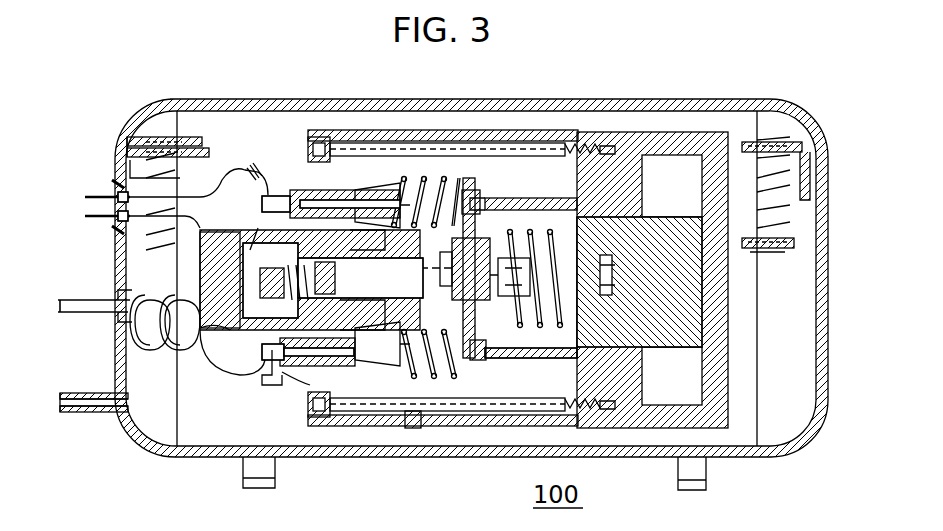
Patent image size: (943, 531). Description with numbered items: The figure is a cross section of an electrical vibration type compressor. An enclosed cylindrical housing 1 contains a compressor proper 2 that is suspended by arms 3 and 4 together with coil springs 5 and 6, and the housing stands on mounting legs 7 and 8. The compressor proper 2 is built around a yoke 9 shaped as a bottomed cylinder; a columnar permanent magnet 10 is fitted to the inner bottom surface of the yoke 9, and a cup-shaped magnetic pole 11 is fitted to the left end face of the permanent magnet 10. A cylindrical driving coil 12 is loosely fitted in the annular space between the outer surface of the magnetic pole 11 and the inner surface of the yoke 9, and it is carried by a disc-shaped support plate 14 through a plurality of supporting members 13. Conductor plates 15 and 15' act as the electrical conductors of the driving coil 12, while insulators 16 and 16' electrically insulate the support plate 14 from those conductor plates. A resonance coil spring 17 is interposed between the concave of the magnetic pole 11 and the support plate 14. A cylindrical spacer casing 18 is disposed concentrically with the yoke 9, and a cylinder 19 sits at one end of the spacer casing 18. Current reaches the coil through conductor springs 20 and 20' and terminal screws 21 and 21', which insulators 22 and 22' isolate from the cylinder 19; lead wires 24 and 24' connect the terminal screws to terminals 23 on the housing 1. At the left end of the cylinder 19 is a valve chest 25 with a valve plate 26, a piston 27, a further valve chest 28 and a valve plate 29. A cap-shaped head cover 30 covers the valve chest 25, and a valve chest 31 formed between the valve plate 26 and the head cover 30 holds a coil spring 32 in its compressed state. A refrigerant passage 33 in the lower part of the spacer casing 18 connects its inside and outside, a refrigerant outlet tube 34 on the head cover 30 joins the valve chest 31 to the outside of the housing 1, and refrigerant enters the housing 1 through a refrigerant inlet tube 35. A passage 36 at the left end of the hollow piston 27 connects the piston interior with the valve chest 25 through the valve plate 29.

The enclosed cylindrical housing 1 is at (242, 99).
The compressor proper 2 is at (513, 128).
The arm 3 is at (127, 170).
The arm 4 is at (812, 150).
The coil spring 5 is at (180, 185).
The coil spring 6 is at (790, 223).
The mounting leg 7 is at (276, 472).
The mounting leg 8 is at (677, 470).
The yoke 9 is at (603, 140).
The columnar permanent magnet 10 is at (677, 222).
The cup-shaped magnetic pole 11 is at (575, 218).
The cylindrical driving coil 12 is at (645, 385).
The supporting member 13 is at (548, 358).
The disc-shaped support plate 14 is at (465, 358).
The conductor plate 15 is at (523, 183).
The conductor plate 15' is at (531, 374).
The insulator 16 is at (498, 190).
The insulator 16' is at (481, 370).
The resonance coil spring 17 is at (515, 323).
The cylindrical spacer casing 18 is at (463, 130).
The cylinder 19 is at (310, 400).
The conductor spring 20 is at (476, 190).
The conductor spring 20' is at (395, 269).
The terminal screw 21 is at (331, 176).
The terminal screw 21' is at (293, 382).
The insulator 22 is at (401, 192).
The insulator 22' is at (403, 361).
The terminals 23 is at (98, 196).
The lead wire 24 is at (199, 157).
The lead wire 24' is at (197, 321).
The valve chest 25 is at (294, 389).
The valve plate 26 is at (264, 370).
The piston 27 is at (410, 242).
The valve chest 28 is at (335, 320).
The valve plate 29 is at (308, 275).
The cap-shaped head cover 30 is at (200, 290).
The valve chest 31 is at (258, 235).
The coil spring 32 is at (258, 250).
The refrigerant passage 33 is at (413, 428).
The refrigerant outlet tube 34 is at (72, 300).
The refrigerant inlet tube 35 is at (80, 393).
The passage 36 is at (338, 280).